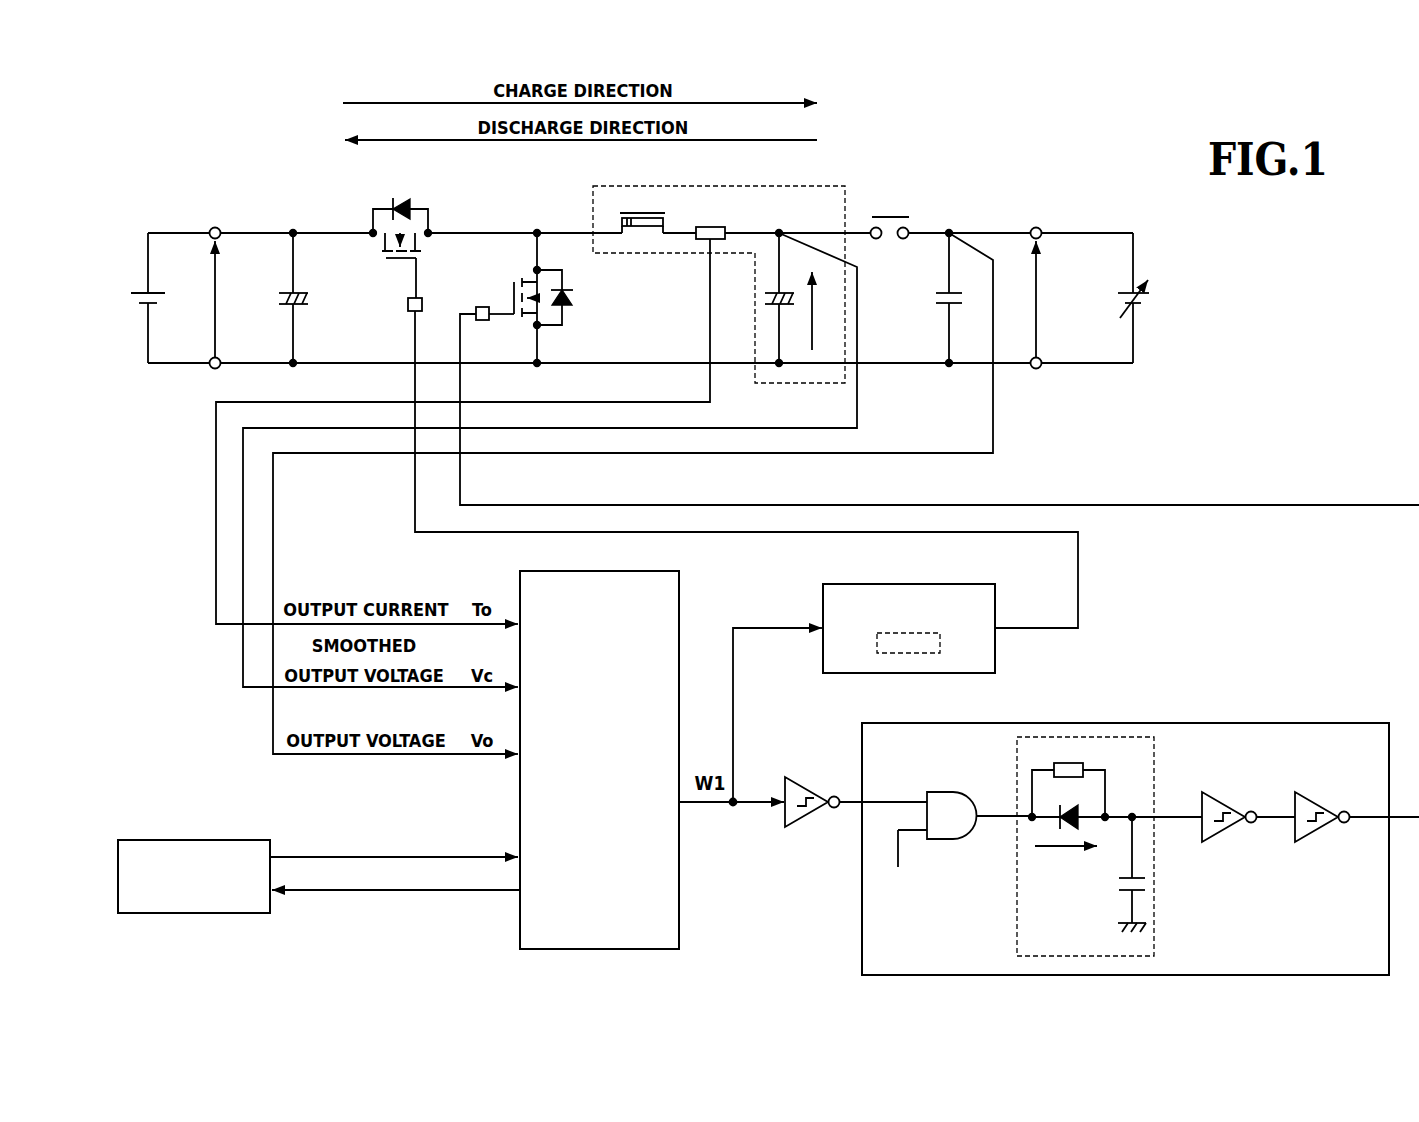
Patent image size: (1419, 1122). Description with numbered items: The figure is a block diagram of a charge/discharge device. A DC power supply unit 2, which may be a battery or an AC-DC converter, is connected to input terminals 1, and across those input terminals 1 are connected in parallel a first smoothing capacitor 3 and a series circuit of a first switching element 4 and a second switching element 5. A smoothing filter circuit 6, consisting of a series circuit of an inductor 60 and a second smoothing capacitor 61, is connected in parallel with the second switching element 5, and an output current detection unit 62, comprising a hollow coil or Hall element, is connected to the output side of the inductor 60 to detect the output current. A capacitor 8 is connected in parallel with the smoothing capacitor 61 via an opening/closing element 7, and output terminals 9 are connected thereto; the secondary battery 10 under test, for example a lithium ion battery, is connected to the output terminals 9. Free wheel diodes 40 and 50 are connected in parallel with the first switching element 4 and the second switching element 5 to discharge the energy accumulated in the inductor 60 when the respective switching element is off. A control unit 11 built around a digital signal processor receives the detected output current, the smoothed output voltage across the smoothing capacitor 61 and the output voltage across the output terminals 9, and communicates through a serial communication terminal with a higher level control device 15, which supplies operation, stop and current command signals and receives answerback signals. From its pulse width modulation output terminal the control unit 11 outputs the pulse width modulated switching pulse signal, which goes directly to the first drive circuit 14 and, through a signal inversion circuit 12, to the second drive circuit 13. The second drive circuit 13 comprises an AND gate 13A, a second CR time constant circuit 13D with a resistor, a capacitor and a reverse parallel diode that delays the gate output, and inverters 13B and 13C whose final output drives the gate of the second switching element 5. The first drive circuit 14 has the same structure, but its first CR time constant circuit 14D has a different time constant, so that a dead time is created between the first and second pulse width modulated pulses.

The input terminals 1 is at (208, 229).
The DC power supply unit 2 is at (138, 290).
The first smoothing capacitor 3 is at (305, 290).
The first switching element 4 is at (385, 260).
The diode 40 is at (412, 200).
The second switching element 5 is at (522, 272).
The diode 50 is at (574, 298).
The smoothing filter circuit 6 is at (822, 186).
The inductor 60 is at (666, 215).
The second smoothing capacitor 61 is at (788, 300).
The output current detection unit 62 is at (725, 224).
The opening/closing element 7 is at (909, 215).
The capacitor 8 is at (938, 300).
The output terminals 9 is at (1042, 230).
The secondary battery 10 is at (1152, 282).
The control unit 11 is at (681, 581).
The signal inversion circuit 12 is at (814, 790).
The second drive circuit 13 is at (1298, 723).
The AND gate 13A is at (955, 840).
The signal inversion circuit 13B is at (1225, 832).
The signal inversion circuit 13C is at (1318, 832).
The second CR time constant circuit 13D is at (1154, 930).
The first drive circuit 14 is at (995, 584).
The first CR time constant circuit 14D is at (940, 653).
The higher level control device 15 is at (118, 840).